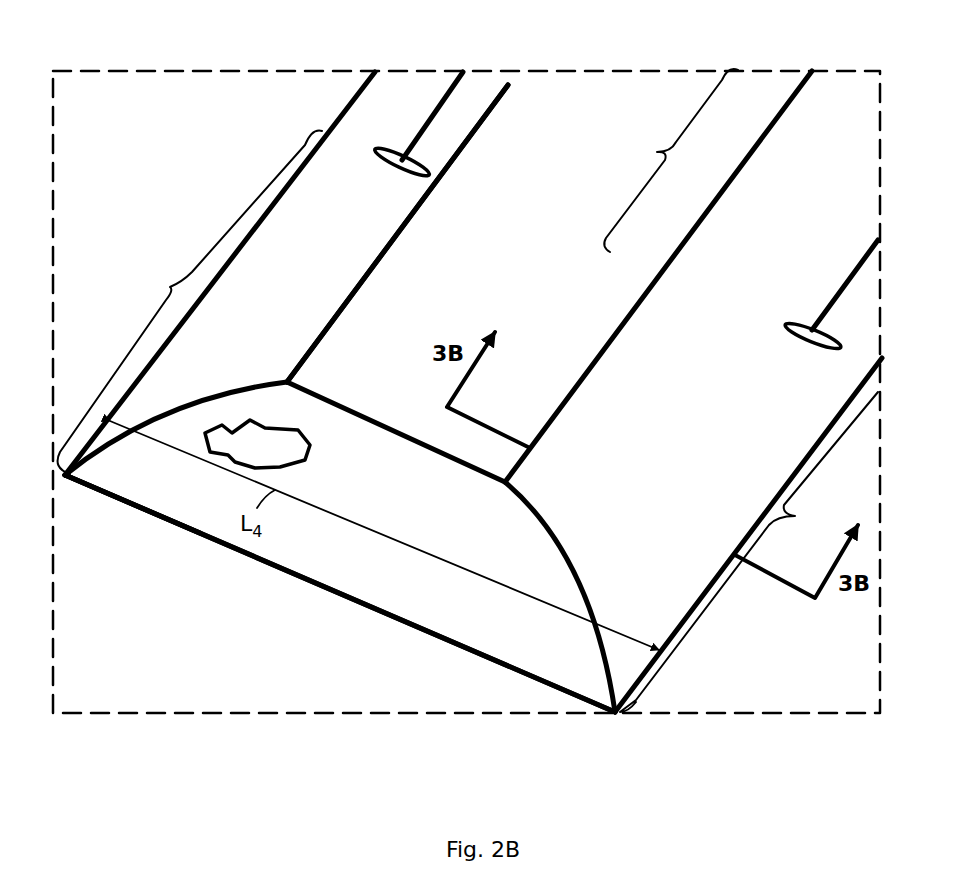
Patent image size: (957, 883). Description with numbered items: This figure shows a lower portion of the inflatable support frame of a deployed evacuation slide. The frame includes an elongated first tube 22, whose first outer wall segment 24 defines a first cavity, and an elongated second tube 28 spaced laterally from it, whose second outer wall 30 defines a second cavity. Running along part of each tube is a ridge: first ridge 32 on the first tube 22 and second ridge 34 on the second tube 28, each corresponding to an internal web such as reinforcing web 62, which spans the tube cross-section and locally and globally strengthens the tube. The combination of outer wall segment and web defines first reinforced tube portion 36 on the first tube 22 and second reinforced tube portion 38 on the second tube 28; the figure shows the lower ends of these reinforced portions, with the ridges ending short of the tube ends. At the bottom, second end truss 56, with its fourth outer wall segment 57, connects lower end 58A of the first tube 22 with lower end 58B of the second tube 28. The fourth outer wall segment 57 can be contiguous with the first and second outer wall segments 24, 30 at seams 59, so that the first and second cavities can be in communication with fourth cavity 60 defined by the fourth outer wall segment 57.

The first tube 22 is at (624, 312).
The first outer wall segment 24 is at (745, 535).
The second tube 28 is at (427, 207).
The second outer wall 30 is at (330, 270).
The first ridge 32 is at (838, 292).
The second ridge 34 is at (443, 100).
The first reinforced tube portion 36 is at (671, 160).
The second reinforced tube portion 38 is at (380, 84).
The second end truss 56 is at (387, 423).
The fourth outer wall segment 57 is at (338, 590).
The lower end of first tube 58A is at (493, 658).
The lower end of second tube 58B is at (97, 497).
The seams 59 is at (191, 402).
The fourth cavity 60 is at (290, 457).
The reinforcing web 62 is at (190, 302).